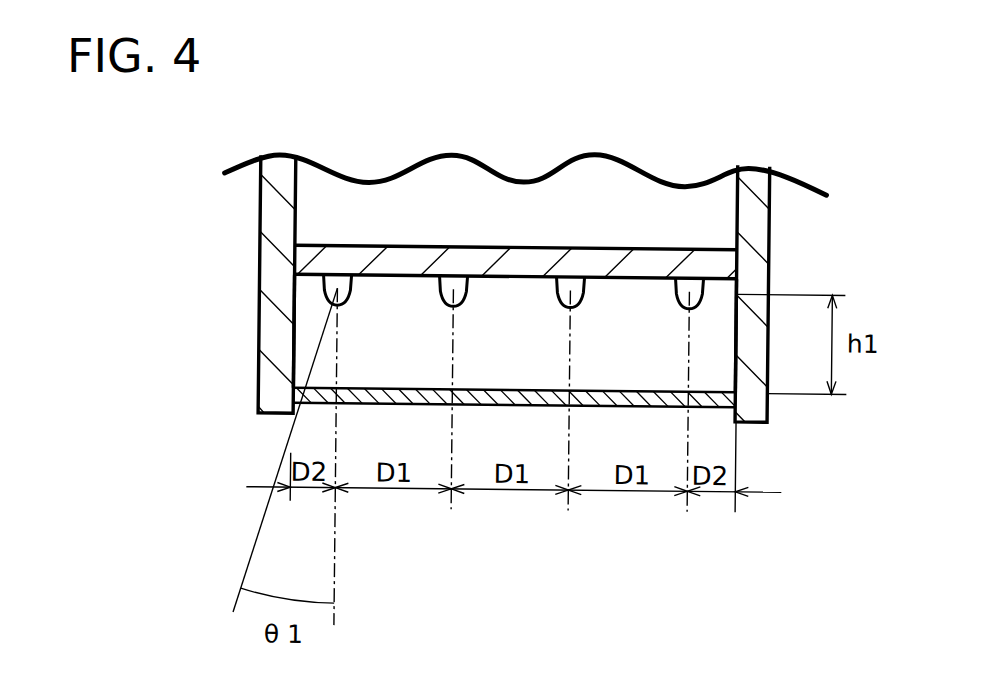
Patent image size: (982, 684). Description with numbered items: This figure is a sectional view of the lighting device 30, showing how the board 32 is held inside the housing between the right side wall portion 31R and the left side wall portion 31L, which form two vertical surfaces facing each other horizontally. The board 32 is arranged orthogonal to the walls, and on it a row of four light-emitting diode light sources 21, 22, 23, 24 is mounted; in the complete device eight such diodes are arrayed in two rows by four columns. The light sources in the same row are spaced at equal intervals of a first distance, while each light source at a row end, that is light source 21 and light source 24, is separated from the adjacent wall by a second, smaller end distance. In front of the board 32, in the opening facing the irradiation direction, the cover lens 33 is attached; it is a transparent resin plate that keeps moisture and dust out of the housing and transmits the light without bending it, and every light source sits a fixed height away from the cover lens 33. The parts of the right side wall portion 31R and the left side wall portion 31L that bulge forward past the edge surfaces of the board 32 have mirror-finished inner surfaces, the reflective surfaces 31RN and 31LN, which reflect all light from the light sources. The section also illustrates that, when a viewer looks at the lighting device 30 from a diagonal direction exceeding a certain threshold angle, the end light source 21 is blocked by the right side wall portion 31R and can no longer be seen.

The lighting device 30 is at (375, 108).
The right side wall portion 31R is at (277, 212).
The left side wall portion 31L is at (757, 229).
The reflective surface 31RN is at (296, 336).
The reflective surface 31LN is at (734, 332).
The board 32 is at (525, 260).
The cover lens 33 is at (507, 398).
The light source 21 is at (353, 295).
The light source 22 is at (467, 292).
The light source 23 is at (558, 304).
The light source 24 is at (675, 291).